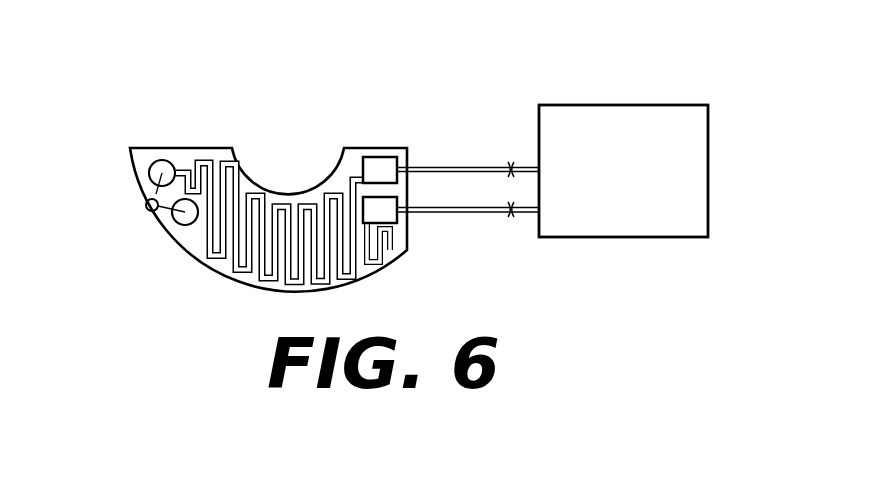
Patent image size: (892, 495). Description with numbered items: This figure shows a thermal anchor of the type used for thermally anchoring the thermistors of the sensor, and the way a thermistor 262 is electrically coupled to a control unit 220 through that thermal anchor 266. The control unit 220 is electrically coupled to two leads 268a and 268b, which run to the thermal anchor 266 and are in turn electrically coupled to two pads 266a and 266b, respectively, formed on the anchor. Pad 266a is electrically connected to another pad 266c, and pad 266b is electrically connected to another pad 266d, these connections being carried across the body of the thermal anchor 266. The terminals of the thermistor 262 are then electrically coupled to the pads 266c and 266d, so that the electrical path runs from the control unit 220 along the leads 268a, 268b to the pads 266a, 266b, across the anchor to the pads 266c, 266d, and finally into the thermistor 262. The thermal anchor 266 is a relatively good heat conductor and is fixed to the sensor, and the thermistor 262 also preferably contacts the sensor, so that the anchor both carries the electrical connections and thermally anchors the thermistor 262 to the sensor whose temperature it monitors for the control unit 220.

The control unit 220 is at (645, 176).
The thermistor 262 is at (146, 207).
The thermal anchor 266 is at (294, 194).
The pad 266a is at (375, 154).
The pad 266b is at (390, 228).
The pad 266c is at (171, 159).
The pad 266d is at (185, 226).
The lead 268a is at (483, 165).
The lead 268b is at (531, 215).